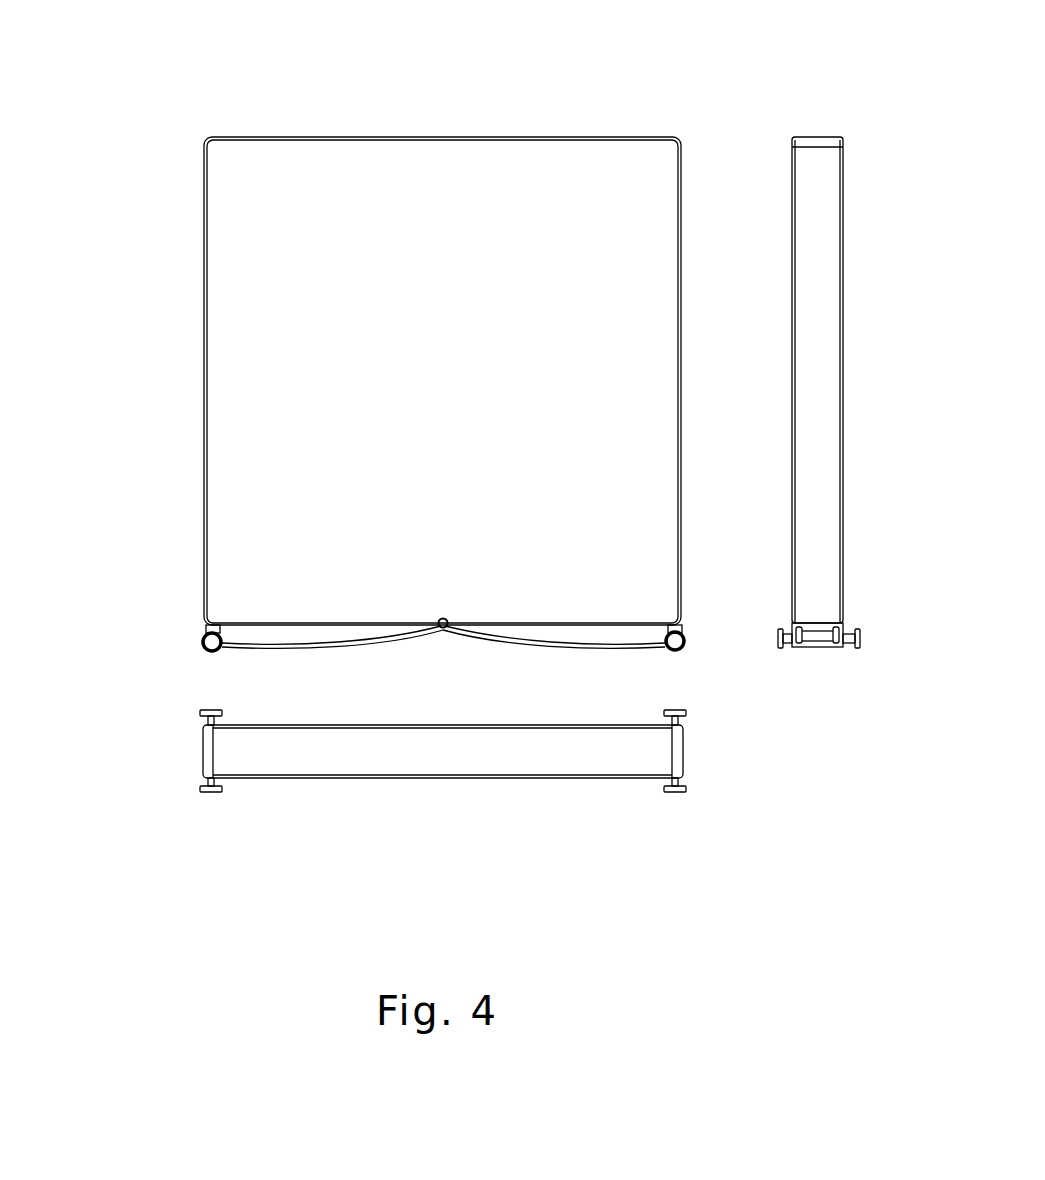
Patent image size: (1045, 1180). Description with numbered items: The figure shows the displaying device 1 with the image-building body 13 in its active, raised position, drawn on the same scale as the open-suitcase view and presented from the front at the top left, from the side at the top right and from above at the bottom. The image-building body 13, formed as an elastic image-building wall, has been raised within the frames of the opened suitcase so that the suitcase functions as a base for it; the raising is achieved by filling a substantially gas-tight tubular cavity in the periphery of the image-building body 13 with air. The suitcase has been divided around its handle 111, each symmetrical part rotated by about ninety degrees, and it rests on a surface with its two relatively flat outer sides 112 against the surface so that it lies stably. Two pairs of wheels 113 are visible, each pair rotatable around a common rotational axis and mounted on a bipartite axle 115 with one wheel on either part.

The displaying device 1 is at (190, 96).
The image-building body 13 is at (680, 138).
The handle 111 is at (441, 628).
The outer sides 112 is at (573, 648).
The wheels 113 is at (850, 640).
The axle 115 is at (852, 645).